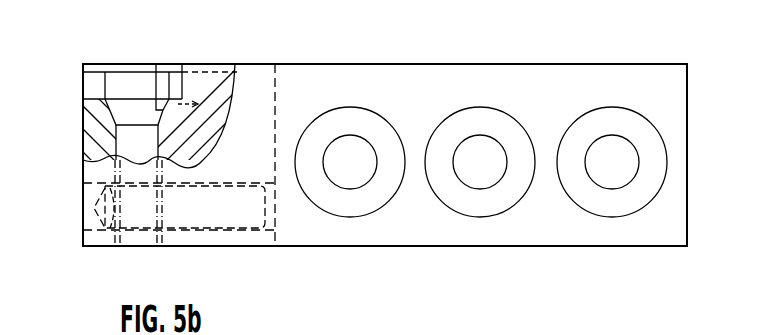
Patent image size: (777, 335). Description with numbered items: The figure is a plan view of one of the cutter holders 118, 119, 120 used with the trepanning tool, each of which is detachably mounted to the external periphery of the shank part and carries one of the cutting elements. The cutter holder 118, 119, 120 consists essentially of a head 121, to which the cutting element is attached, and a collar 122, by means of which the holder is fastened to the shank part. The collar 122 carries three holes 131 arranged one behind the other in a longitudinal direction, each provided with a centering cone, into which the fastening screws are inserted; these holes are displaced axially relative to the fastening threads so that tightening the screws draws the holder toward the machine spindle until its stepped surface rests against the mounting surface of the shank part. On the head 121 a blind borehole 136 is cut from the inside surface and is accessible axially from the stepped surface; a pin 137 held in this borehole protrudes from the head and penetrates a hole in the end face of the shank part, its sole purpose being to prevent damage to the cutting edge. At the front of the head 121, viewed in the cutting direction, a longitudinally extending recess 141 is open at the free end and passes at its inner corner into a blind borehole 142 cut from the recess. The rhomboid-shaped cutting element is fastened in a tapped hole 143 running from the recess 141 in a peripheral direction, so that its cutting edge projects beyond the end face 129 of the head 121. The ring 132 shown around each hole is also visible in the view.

The cutter holder 118 is at (414, 96).
The cutter holder 119 is at (480, 162).
The cutter holder 120 is at (612, 162).
The head 121 is at (257, 88).
The collar 122 is at (328, 84).
The end face of head 129 is at (82, 88).
The holes 131 is at (358, 189).
The annular recess 132 is at (510, 197).
The blind borehole 136 is at (190, 226).
The pin 137 is at (270, 218).
The recess 141 is at (127, 98).
The blind borehole 142 is at (198, 86).
The tapped hole 143 is at (110, 125).